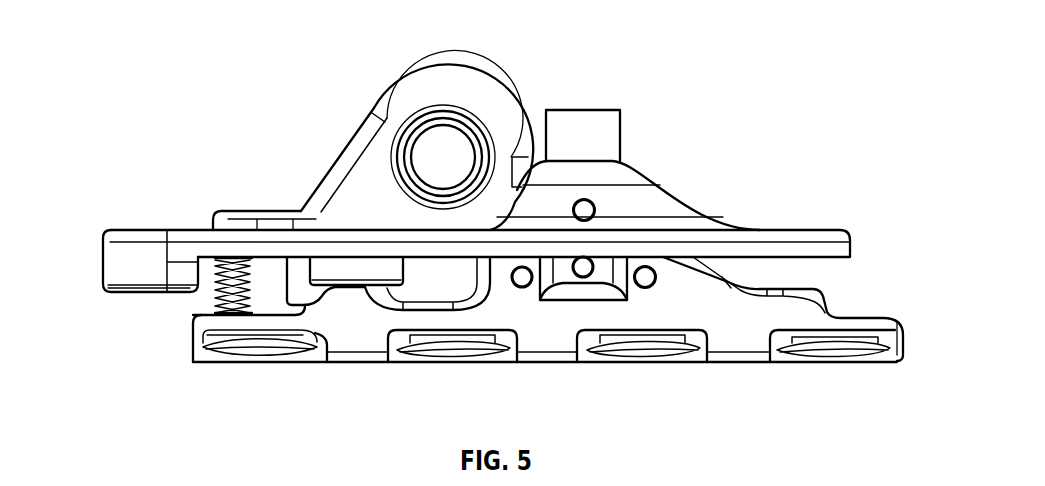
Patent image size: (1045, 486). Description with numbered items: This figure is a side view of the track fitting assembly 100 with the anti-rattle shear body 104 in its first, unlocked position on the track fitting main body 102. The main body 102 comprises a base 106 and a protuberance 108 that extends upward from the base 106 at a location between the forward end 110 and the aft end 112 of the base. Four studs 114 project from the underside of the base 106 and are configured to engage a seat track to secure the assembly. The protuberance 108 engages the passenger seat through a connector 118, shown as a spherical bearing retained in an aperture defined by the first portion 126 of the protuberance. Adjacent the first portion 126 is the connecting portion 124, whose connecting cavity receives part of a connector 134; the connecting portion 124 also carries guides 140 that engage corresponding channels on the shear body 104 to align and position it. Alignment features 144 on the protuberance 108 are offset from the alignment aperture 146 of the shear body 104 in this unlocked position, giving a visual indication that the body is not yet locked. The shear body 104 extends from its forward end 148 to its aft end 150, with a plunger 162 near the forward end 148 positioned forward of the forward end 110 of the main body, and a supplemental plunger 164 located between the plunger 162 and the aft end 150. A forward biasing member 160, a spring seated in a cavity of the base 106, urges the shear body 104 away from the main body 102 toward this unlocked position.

The track fitting assembly 100 is at (266, 148).
The track fitting main body 102 is at (740, 352).
The anti-rattle shear body 104 is at (777, 238).
The base 106 is at (353, 340).
The protuberance 108 is at (465, 88).
The forward end 110 is at (193, 342).
The aft end 112 is at (903, 357).
The stud 114 is at (253, 358).
The connector 118 is at (437, 126).
The connecting portion 124 is at (608, 278).
The first portion 126 is at (392, 110).
The connector 134 is at (571, 112).
The guides 140 is at (563, 285).
The alignment features 144 is at (643, 263).
The alignment aperture 146 is at (588, 200).
The forward end 148 is at (103, 279).
The aft end 150 is at (852, 252).
The forward biasing member 160 is at (224, 313).
The plunger 162 is at (115, 289).
The supplemental plunger 164 is at (347, 277).